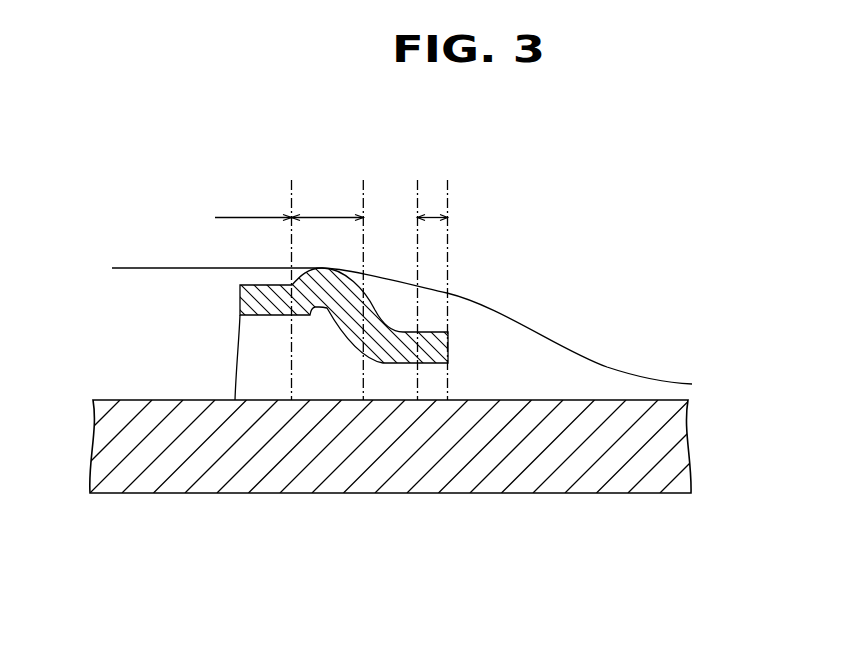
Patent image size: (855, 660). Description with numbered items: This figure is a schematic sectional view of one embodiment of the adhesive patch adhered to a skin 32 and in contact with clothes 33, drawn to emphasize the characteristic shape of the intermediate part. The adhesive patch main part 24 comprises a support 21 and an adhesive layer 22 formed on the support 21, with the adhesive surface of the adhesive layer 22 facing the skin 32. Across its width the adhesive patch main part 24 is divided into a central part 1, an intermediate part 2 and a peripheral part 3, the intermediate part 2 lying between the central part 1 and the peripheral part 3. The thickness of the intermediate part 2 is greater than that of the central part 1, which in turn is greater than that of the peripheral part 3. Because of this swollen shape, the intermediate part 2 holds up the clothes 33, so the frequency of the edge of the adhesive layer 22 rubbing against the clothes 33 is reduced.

The central part 1 is at (253, 290).
The intermediate part 2 is at (328, 290).
The peripheral part 3 is at (433, 290).
The support 21 is at (247, 301).
The adhesive layer 22 is at (250, 347).
The adhesive patch main part 24 is at (327, 325).
The skin 32 is at (175, 483).
The clothes 33 is at (507, 318).